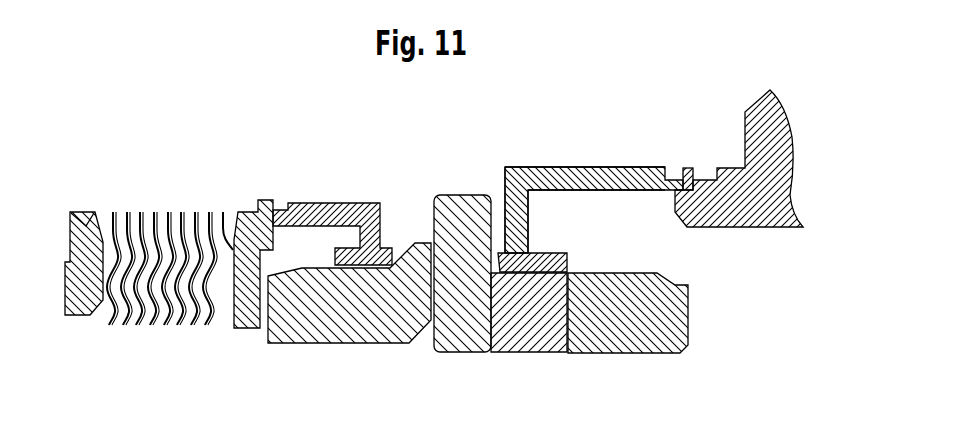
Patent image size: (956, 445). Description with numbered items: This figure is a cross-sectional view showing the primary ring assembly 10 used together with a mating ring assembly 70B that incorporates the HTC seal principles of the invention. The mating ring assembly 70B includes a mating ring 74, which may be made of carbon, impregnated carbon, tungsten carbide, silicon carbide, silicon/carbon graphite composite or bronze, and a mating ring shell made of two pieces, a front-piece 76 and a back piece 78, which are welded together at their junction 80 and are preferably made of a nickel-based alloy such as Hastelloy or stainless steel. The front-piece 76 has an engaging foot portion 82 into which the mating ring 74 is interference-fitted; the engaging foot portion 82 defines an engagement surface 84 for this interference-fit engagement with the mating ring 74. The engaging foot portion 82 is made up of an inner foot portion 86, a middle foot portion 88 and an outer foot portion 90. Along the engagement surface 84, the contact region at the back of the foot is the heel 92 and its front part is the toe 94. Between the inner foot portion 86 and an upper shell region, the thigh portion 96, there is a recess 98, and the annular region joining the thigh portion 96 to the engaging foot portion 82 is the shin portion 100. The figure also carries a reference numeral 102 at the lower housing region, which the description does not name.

The primary ring assembly 10 is at (302, 188).
The mating ring assembly 70B is at (494, 245).
The mating ring 74 is at (450, 195).
The front-piece 76 is at (577, 175).
The back piece 78 is at (744, 131).
The junction 80 is at (688, 168).
The engaging foot portion 82 is at (542, 253).
The engagement surface 84 is at (522, 274).
The inner foot portion 86 is at (557, 253).
The middle foot portion 88 is at (520, 232).
The outer foot portion 90 is at (499, 250).
The heel 92 is at (567, 275).
The toe 94 is at (511, 274).
The thigh portion 96 is at (537, 167).
The recess 98 is at (545, 192).
The shin portion 100 is at (505, 178).
The lower housing block 102 is at (433, 283).